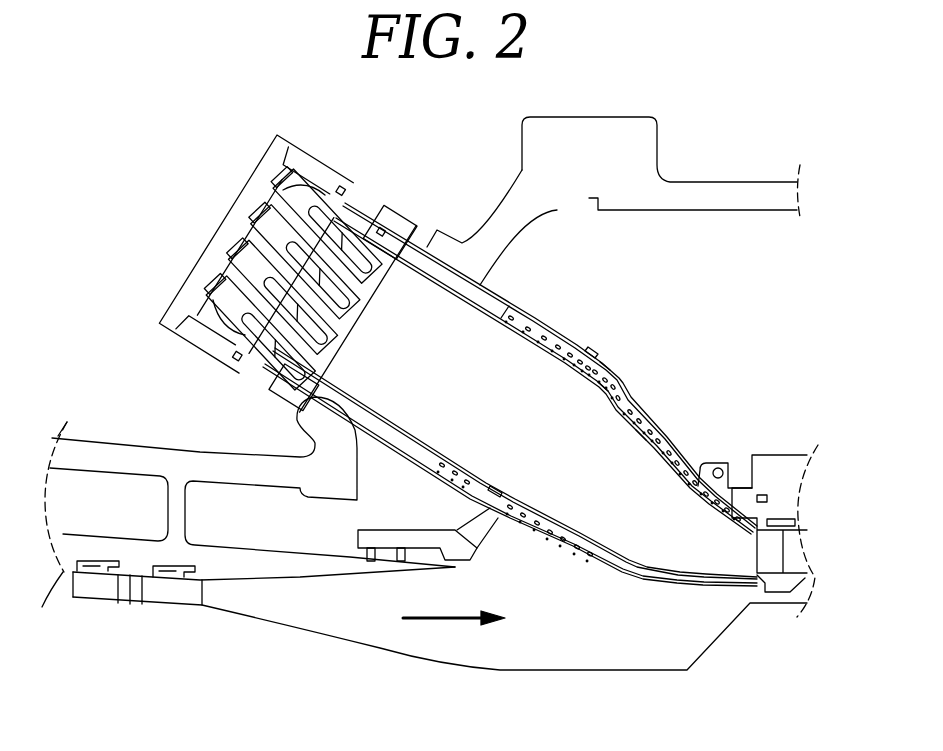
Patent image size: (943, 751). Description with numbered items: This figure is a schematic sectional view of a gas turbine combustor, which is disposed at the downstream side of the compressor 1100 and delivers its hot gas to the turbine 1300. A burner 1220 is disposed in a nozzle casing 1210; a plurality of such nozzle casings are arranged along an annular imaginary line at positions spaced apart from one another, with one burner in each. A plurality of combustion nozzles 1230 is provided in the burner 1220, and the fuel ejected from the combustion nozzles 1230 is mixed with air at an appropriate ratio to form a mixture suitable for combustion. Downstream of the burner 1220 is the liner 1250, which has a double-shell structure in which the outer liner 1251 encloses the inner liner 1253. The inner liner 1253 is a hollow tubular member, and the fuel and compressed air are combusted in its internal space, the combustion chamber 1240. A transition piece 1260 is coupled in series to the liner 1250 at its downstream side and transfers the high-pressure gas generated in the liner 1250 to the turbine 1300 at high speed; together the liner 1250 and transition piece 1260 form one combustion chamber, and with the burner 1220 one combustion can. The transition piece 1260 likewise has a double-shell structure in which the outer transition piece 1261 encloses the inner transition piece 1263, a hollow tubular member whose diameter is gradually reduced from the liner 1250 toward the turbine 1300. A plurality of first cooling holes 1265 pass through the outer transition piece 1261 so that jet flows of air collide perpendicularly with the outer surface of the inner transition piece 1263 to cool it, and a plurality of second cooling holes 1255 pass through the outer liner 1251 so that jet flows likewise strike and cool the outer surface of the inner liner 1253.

The compressor 1100 is at (92, 612).
The nozzle casing 1210 is at (268, 266).
The burner 1220 is at (257, 254).
The combustion nozzle 1230 is at (230, 227).
The combustion chamber 1240 is at (400, 347).
The liner 1250 is at (545, 368).
The outer liner 1251 is at (570, 343).
The inner liner 1253 is at (517, 325).
The second cooling hole 1255 is at (622, 324).
The transition piece 1260 is at (691, 388).
The outer transition piece 1261 is at (602, 412).
The inner transition piece 1263 is at (600, 372).
The first cooling hole 1265 is at (640, 435).
The turbine 1300 is at (805, 553).